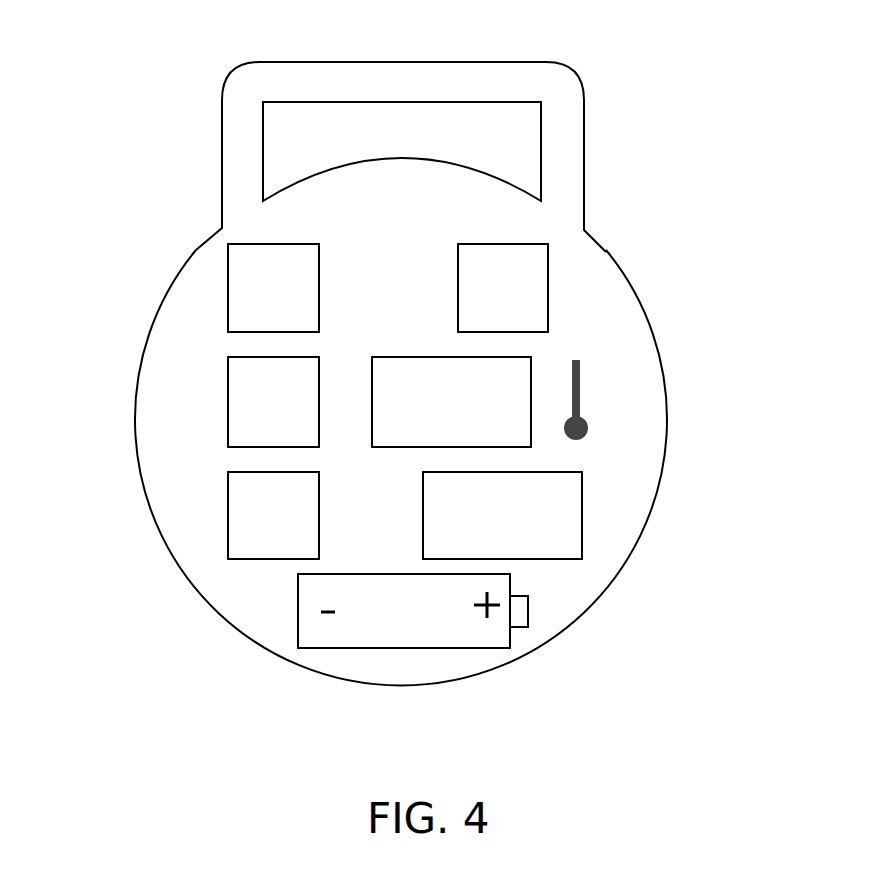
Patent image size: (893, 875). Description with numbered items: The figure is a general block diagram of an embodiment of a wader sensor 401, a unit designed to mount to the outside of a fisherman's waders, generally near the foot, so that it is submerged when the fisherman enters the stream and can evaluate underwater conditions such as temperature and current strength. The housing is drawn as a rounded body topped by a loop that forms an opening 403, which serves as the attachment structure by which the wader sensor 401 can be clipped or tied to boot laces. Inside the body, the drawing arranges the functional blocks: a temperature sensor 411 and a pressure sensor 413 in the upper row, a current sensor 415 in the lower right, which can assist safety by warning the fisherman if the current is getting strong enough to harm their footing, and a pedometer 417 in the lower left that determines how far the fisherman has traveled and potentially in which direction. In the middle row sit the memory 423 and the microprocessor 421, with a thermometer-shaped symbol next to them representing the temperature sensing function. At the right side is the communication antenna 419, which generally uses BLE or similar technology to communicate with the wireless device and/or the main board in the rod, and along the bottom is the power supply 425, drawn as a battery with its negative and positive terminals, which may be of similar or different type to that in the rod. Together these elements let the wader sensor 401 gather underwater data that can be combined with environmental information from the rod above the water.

The wader sensor 401 is at (650, 323).
The opening 403 is at (335, 62).
The temperature sensor 411 is at (245, 288).
The pressure sensor 413 is at (538, 292).
The current sensor 415 is at (568, 527).
The pedometer 417 is at (243, 508).
The communication antenna 419 is at (580, 405).
The microprocessor 421 is at (420, 357).
The memory 423 is at (245, 428).
The power supply 425 is at (423, 650).